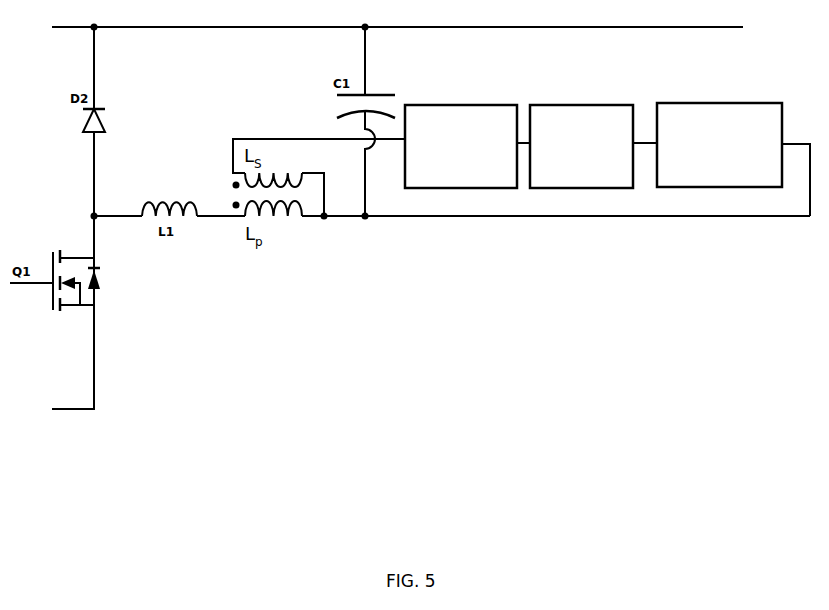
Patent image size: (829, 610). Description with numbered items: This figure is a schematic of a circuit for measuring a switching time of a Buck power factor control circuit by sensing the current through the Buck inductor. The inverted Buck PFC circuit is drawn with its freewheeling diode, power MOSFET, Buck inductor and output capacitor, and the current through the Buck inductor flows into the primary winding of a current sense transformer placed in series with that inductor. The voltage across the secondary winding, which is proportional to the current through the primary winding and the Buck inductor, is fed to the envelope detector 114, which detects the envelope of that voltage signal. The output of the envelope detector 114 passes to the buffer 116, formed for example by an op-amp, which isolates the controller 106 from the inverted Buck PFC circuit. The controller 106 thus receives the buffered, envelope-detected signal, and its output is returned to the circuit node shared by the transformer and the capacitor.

The envelope detector 114 is at (461, 146).
The buffer 116 is at (581, 146).
The controller 106 is at (719, 145).